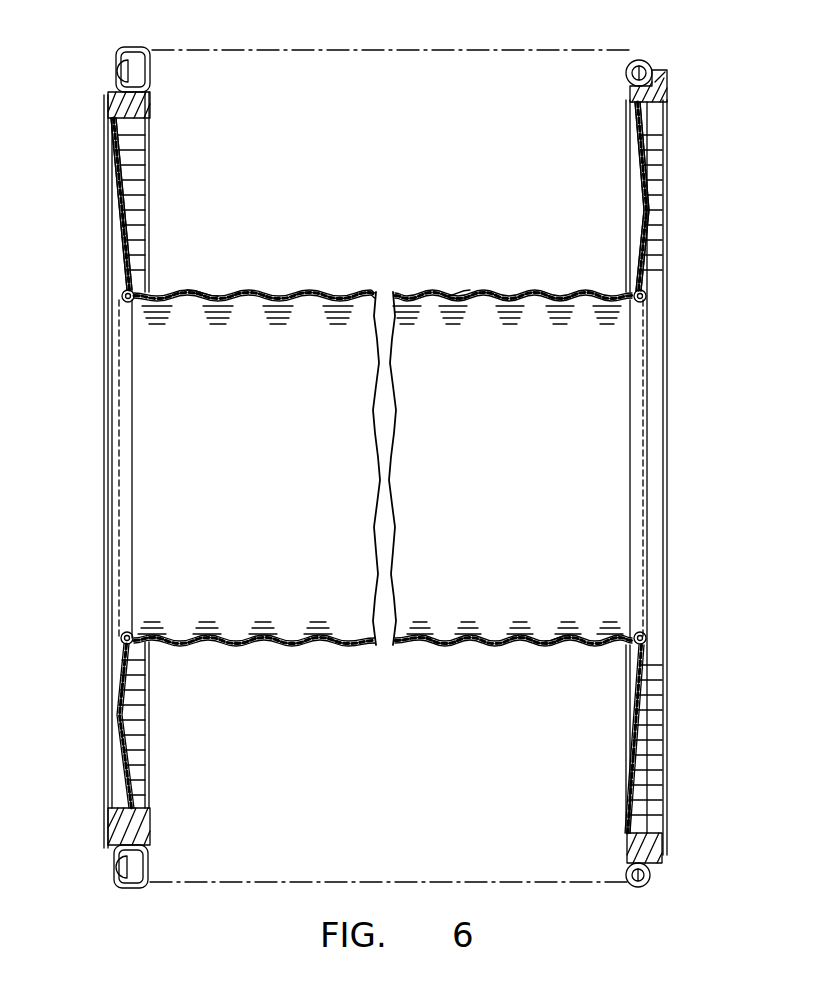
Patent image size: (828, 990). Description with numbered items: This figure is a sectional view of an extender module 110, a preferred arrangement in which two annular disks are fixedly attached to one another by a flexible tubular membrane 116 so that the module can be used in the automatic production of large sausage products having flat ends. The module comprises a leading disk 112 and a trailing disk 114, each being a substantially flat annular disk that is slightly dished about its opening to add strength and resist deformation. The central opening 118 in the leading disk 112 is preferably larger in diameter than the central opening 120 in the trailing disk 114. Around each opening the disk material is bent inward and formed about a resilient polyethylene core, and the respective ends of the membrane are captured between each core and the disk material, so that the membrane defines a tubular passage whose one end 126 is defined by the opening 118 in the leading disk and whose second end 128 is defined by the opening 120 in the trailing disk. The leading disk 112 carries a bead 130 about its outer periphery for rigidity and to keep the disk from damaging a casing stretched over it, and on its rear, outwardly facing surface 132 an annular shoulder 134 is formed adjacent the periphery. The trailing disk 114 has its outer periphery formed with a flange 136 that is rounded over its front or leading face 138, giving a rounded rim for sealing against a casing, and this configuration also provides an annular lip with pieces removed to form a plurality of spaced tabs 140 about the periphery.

The extender module 110 is at (353, 50).
The leading disk 112 is at (666, 162).
The trailing disk 114 is at (156, 149).
The flexible tubular membrane 116 is at (459, 296).
The central opening 118 is at (645, 433).
The central opening 120 is at (126, 460).
The end of tubular membrane 126 is at (562, 650).
The end of tubular membrane 128 is at (206, 293).
The bead 130 is at (641, 59).
The outwardly facing surface 132 is at (650, 236).
The annular shoulder 134 is at (661, 84).
The flange 136 is at (143, 49).
The leading face 138 is at (122, 188).
The tabs 140 is at (117, 78).